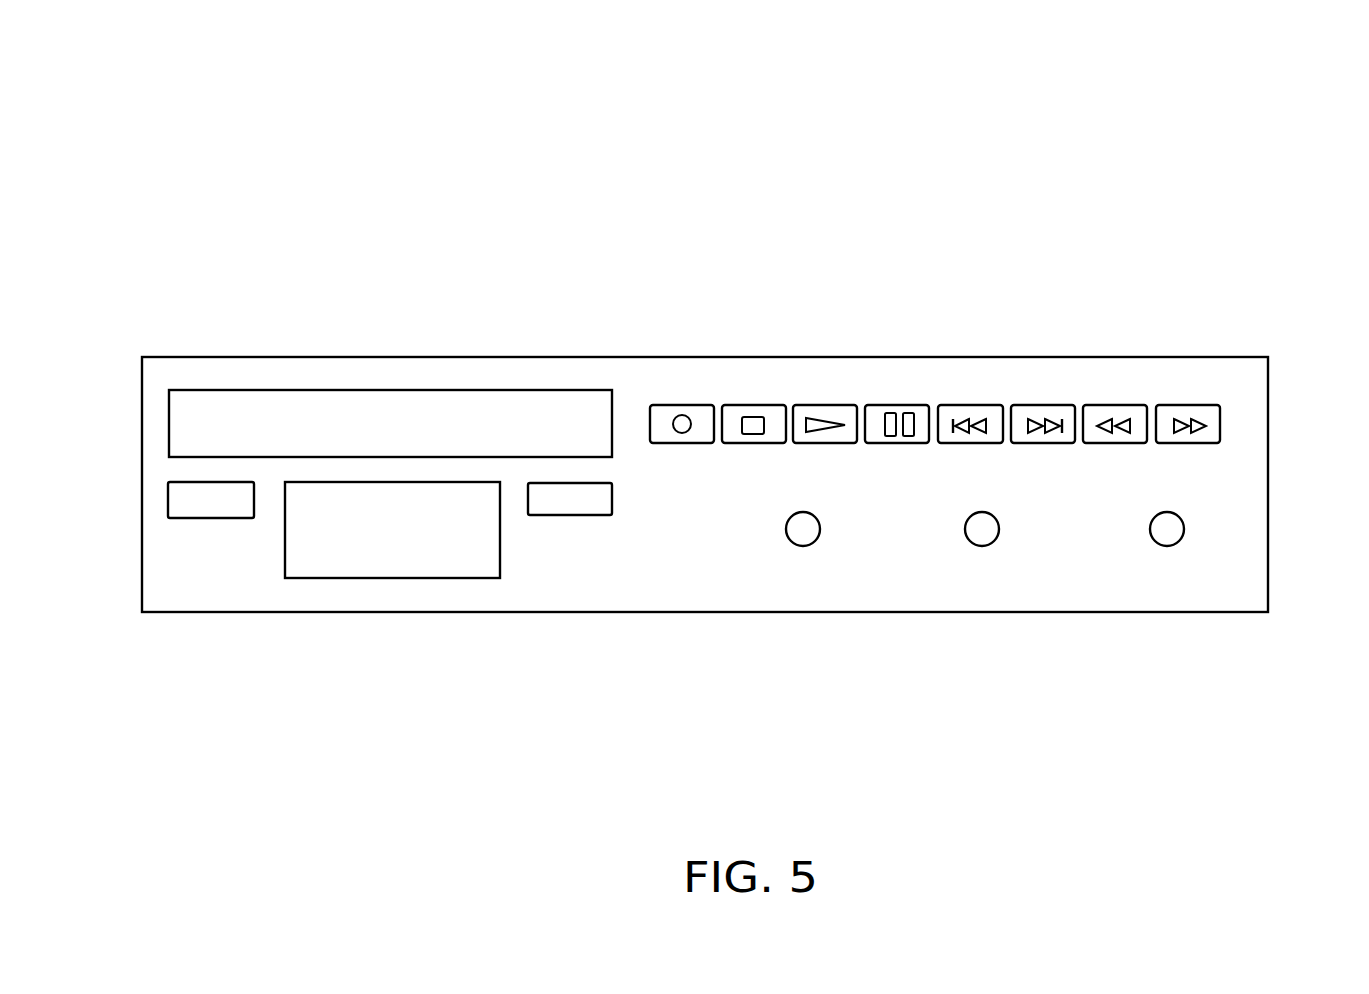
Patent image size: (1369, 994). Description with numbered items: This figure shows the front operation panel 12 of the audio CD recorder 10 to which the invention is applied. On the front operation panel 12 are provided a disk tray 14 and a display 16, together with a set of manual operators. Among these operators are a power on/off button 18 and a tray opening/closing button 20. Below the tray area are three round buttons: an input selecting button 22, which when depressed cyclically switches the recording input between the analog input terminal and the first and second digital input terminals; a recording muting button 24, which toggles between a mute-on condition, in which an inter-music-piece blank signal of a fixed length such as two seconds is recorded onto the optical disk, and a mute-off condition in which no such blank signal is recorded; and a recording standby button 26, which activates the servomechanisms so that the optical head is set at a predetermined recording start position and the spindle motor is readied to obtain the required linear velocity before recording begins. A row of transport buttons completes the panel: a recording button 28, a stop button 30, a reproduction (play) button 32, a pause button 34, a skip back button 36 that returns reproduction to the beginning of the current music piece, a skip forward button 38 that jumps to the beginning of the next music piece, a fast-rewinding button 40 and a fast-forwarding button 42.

The audio CD recorder 10 is at (1024, 190).
The front operation panel 12 is at (1253, 595).
The disk tray 14 is at (318, 410).
The display 16 is at (410, 549).
The power on/off button 18 is at (204, 520).
The tray opening/closing button 20 is at (583, 483).
The input selecting button 22 is at (786, 532).
The recording muting button 24 is at (965, 532).
The recording standby button 26 is at (1150, 532).
The recording button 28 is at (683, 405).
The stop button 30 is at (748, 405).
The reproduction (play) button 32 is at (821, 405).
The pause button 34 is at (892, 405).
The skip back button 36 is at (963, 405).
The skip forward button 38 is at (1036, 405).
The fast-rewinding button 40 is at (1103, 405).
The fast-forwarding button 42 is at (1183, 405).